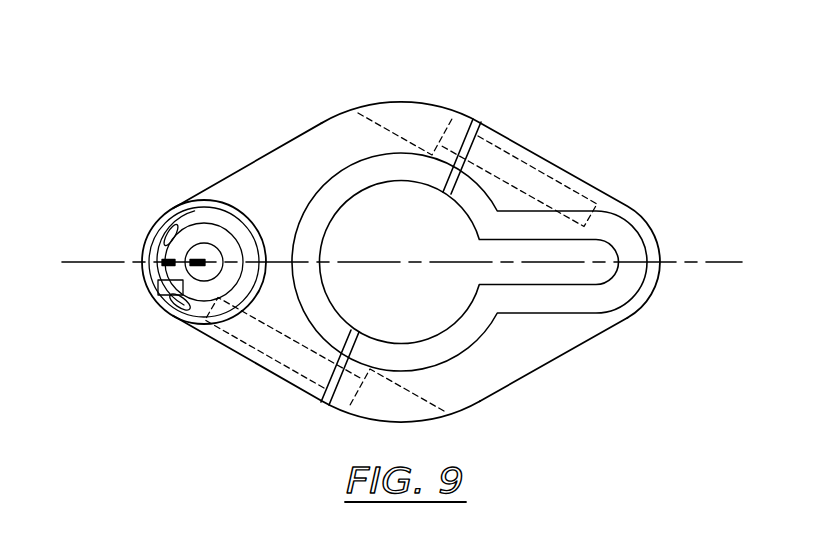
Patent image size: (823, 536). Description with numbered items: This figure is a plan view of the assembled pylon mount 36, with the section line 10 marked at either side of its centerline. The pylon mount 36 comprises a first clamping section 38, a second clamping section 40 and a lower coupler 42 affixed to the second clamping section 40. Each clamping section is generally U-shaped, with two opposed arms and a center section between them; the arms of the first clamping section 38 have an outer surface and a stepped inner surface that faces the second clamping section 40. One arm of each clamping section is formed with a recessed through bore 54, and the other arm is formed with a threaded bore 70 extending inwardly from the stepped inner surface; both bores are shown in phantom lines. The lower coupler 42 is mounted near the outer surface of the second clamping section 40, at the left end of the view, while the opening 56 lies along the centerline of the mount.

The section line 10- 10 is at (62, 262).
The pylon mount 36 is at (592, 77).
The first clamping section 38 is at (590, 345).
The second clamping section 40 is at (255, 160).
The lower coupler 42 is at (190, 202).
The recessed through bore 54 is at (418, 127).
The keyhole slot 56 is at (592, 272).
The threaded bore 70 is at (541, 171).